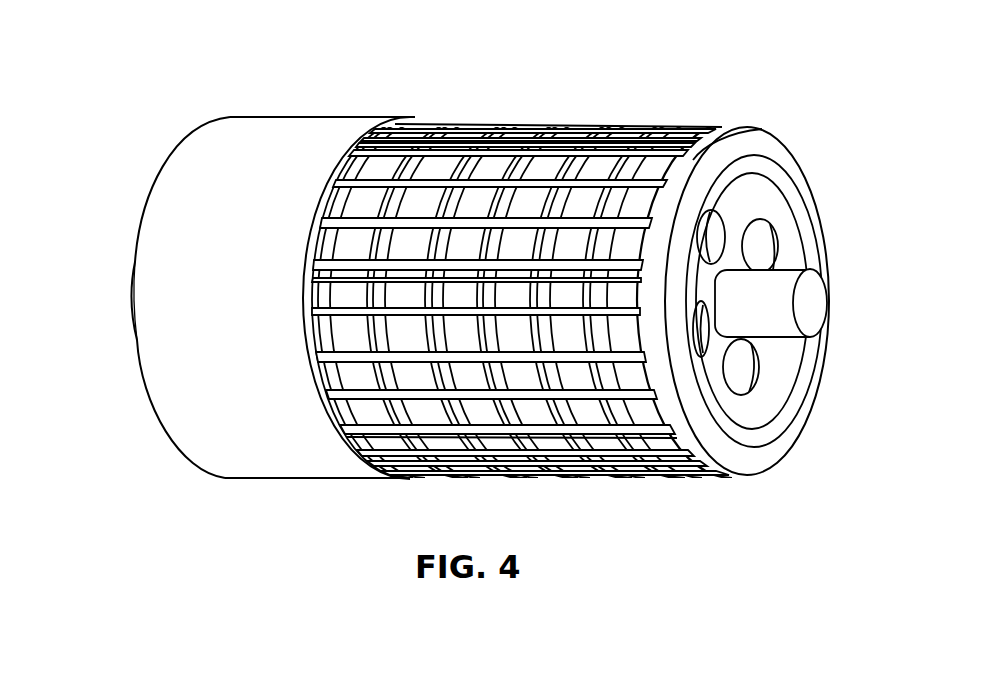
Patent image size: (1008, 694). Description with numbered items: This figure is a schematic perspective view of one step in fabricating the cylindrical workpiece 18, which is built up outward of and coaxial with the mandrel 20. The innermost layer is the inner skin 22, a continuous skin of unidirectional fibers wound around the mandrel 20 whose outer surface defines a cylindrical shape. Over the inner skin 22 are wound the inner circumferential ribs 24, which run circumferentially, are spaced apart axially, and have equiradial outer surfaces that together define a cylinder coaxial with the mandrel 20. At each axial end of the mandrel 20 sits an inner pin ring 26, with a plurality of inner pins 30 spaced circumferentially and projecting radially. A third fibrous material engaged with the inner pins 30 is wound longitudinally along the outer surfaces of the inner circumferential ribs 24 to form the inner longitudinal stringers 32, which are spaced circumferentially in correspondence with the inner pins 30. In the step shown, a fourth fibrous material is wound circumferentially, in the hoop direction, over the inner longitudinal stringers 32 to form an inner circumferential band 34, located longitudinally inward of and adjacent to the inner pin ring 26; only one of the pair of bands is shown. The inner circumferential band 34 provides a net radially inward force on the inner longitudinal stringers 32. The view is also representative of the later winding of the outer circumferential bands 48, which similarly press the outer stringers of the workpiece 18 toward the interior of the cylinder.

The cylindrical workpiece 18 is at (197, 182).
The inner circumferential band 34 is at (320, 261).
The outer circumferential band 48 is at (248, 143).
The inner skin 22 is at (390, 172).
The inner longitudinal stringer 32 is at (537, 174).
The inner circumferential rib 24 is at (652, 190).
The inner pin 30 is at (752, 133).
The inner pin ring 26 is at (763, 464).
The mandrel 20 is at (778, 300).